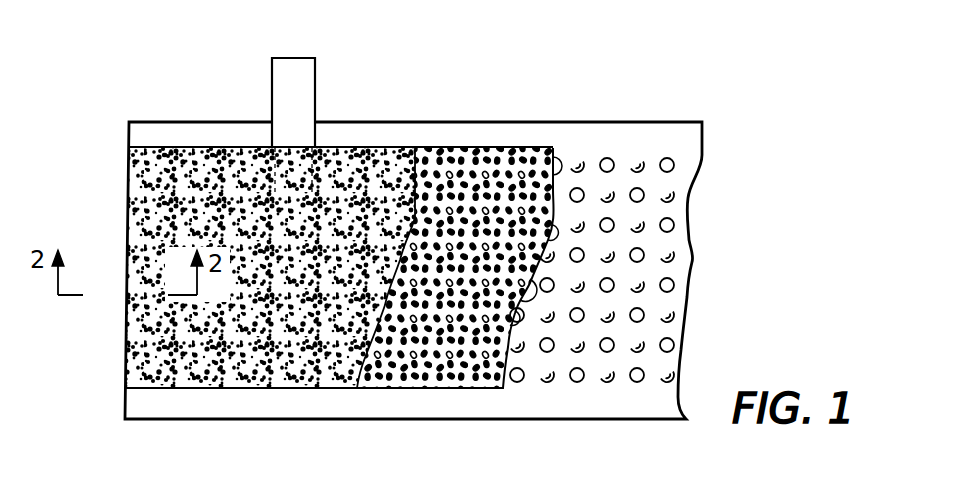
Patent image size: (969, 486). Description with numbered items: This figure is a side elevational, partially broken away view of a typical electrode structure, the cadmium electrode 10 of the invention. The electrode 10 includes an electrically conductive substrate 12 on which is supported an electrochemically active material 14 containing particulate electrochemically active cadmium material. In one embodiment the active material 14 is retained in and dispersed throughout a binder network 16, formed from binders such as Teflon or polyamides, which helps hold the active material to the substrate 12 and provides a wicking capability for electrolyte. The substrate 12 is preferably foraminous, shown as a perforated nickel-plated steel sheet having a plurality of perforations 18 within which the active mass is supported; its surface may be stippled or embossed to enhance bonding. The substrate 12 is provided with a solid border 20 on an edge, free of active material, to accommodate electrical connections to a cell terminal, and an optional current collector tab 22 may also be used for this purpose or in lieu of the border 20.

The cadmium electrode 10 is at (712, 208).
The electrically conductive substrate 12 is at (670, 300).
The electrochemically active material 14 is at (347, 173).
The binder network 16 is at (447, 375).
The perforations 18 is at (673, 342).
The border 20 is at (242, 400).
The current collector tab 22 is at (288, 88).